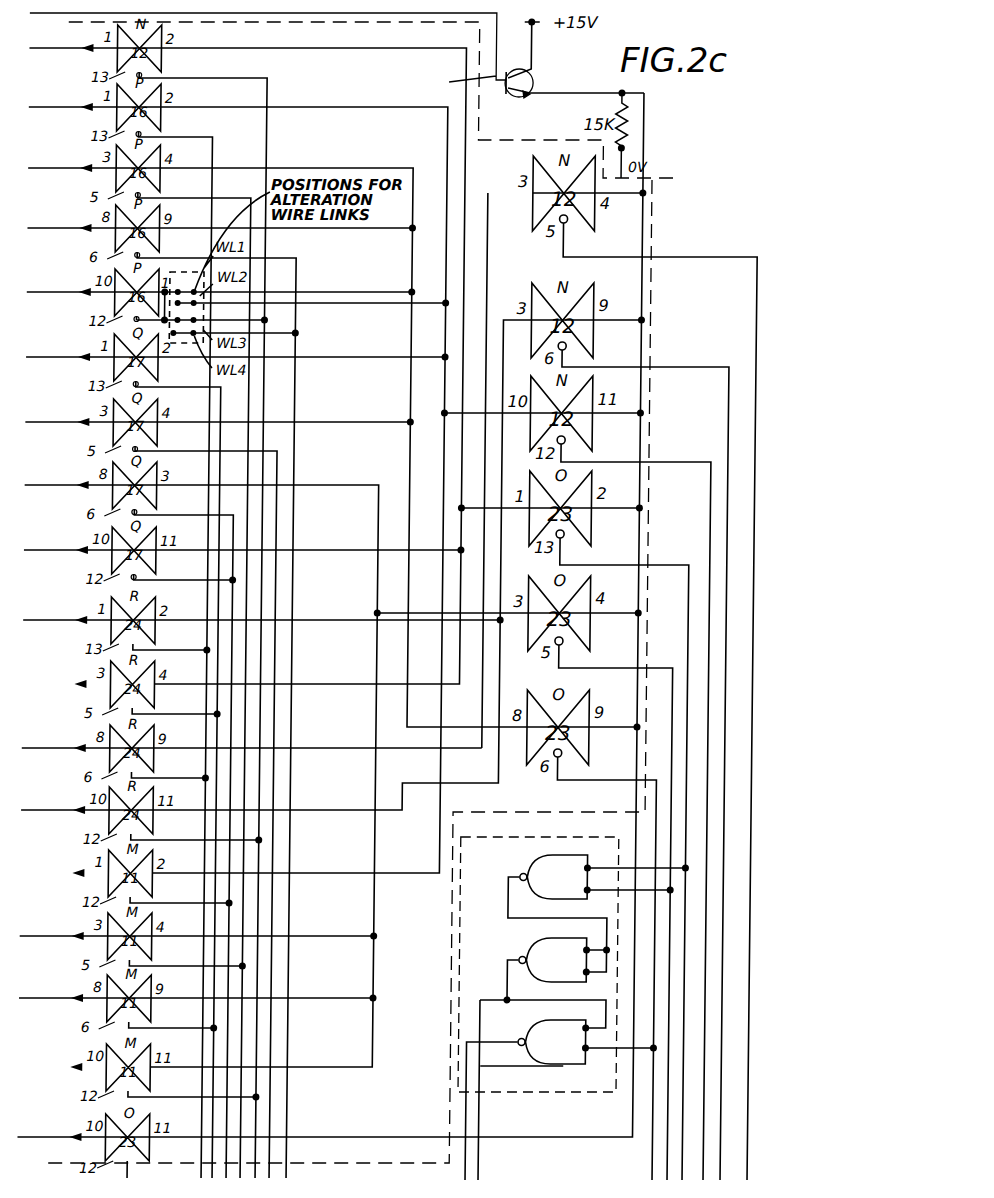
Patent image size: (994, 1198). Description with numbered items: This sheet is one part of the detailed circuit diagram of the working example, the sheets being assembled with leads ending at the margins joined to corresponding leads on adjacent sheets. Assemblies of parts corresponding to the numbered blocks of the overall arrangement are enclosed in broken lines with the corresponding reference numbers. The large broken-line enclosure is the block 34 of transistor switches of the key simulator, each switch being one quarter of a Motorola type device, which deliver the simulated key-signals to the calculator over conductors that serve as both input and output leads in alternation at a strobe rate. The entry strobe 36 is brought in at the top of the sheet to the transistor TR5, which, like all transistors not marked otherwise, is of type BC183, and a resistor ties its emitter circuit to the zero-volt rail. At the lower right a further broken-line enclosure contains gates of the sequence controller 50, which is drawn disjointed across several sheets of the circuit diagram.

The key simulator switch block 34 is at (550, 142).
The entry strobe 36 is at (268, 61).
The sequence controller 50 is at (520, 1094).
The transistor TR5 is at (575, 60).